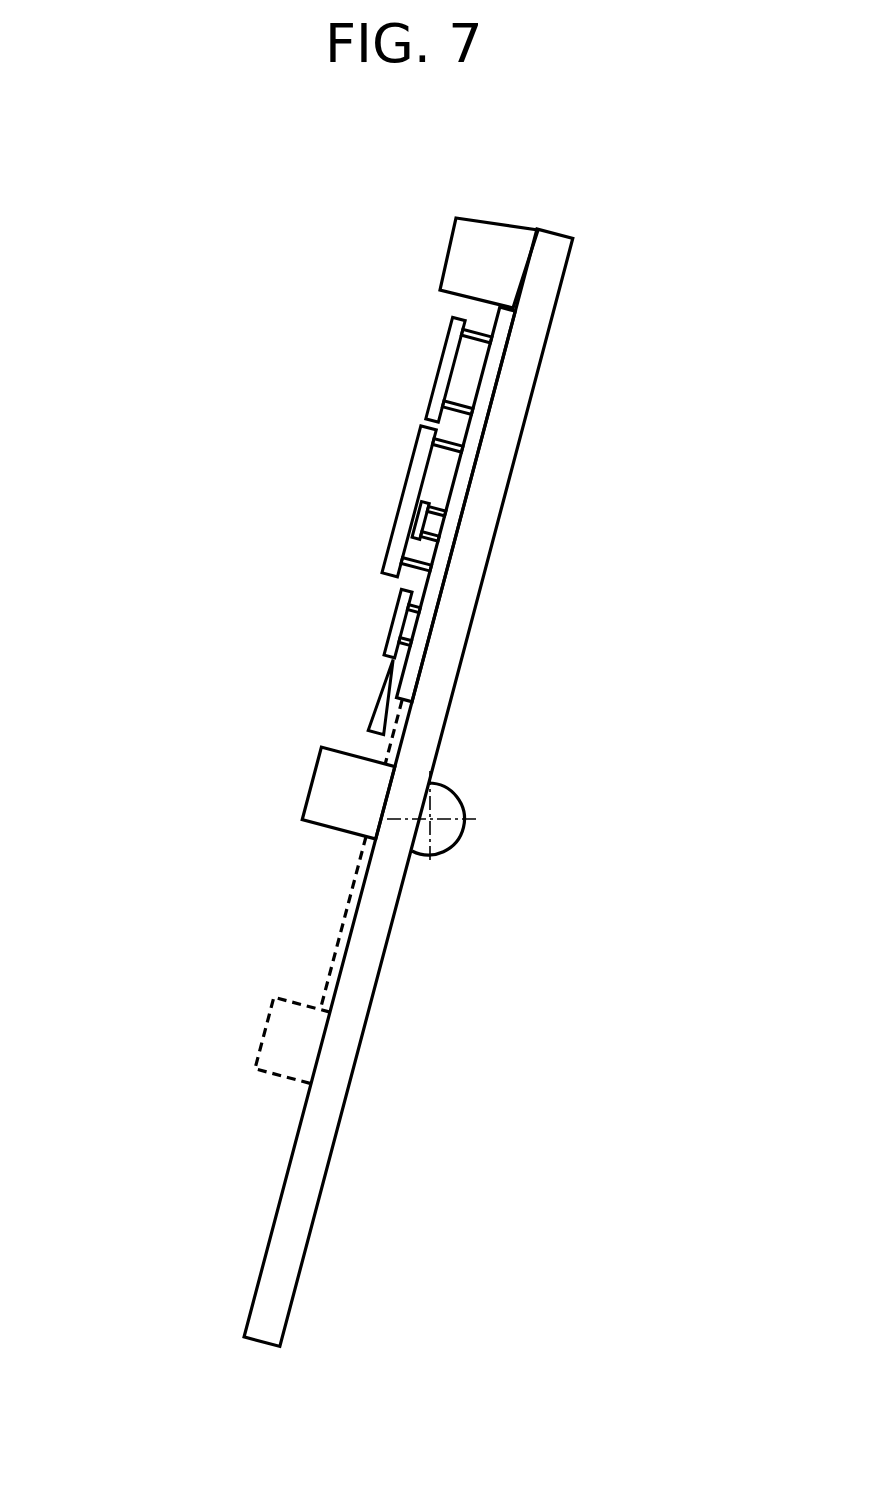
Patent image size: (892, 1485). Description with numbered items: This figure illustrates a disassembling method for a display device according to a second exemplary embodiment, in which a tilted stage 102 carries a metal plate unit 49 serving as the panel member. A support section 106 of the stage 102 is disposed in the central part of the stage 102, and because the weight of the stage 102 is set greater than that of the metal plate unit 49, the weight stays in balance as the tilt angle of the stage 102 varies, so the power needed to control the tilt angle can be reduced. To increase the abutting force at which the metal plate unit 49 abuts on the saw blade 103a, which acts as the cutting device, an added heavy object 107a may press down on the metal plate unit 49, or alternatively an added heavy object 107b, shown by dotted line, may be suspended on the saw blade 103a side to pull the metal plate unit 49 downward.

The stage 102 is at (537, 332).
The added heavy object 107a is at (453, 245).
The metal plate unit 49 is at (412, 433).
The saw blade 103a is at (373, 723).
The added heavy object 107b is at (260, 1050).
The support section 106 is at (442, 800).